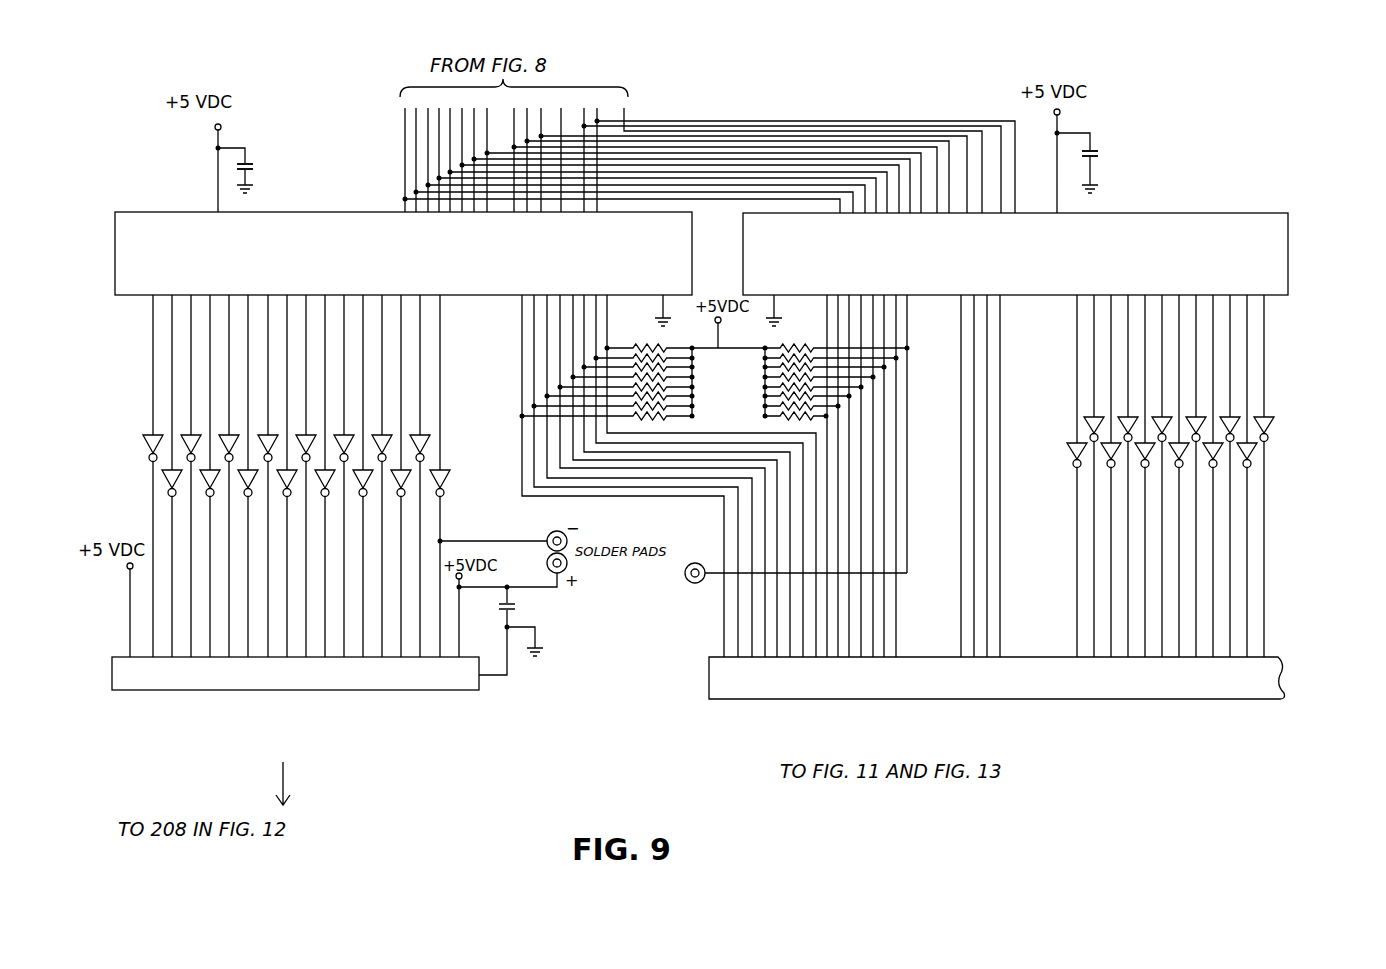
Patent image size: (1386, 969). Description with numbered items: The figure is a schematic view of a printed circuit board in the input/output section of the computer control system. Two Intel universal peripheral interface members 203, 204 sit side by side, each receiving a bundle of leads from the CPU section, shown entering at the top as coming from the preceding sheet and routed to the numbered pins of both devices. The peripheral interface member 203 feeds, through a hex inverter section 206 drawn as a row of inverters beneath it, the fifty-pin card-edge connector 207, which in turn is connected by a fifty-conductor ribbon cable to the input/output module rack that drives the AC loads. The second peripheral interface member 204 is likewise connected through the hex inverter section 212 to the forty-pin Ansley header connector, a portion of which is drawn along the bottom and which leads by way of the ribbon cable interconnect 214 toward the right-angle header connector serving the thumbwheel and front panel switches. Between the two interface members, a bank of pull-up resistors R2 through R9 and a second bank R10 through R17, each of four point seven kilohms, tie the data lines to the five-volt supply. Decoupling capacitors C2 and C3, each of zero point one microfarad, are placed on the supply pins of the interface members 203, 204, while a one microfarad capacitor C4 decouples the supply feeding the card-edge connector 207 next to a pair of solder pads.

The universal peripheral interface member 203 is at (258, 270).
The universal peripheral interface member 204 is at (873, 272).
The hex inverter section 206 is at (135, 433).
The card-edge connector 207 is at (186, 690).
The hex inverter section 212 is at (1283, 417).
The ribbon cable interconnect 214 is at (1002, 697).
The capacitor C2 is at (257, 169).
The capacitor C3 is at (1102, 153).
The capacitor C4 is at (520, 609).
The resistor R2 is at (649, 341).
The resistor R9 is at (607, 422).
The resistor R10 is at (836, 341).
The resistor R17 is at (795, 422).